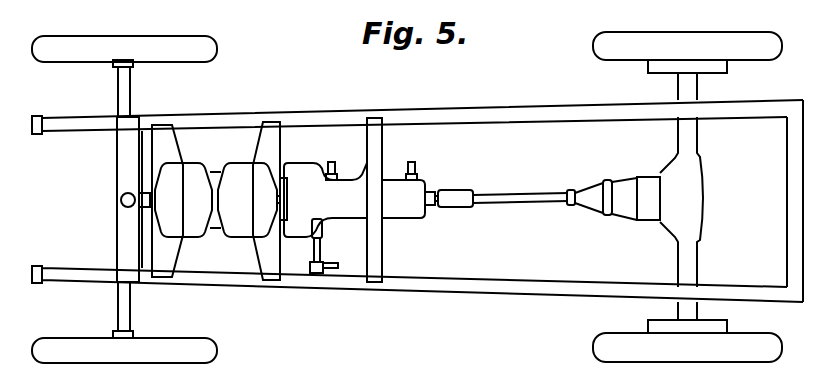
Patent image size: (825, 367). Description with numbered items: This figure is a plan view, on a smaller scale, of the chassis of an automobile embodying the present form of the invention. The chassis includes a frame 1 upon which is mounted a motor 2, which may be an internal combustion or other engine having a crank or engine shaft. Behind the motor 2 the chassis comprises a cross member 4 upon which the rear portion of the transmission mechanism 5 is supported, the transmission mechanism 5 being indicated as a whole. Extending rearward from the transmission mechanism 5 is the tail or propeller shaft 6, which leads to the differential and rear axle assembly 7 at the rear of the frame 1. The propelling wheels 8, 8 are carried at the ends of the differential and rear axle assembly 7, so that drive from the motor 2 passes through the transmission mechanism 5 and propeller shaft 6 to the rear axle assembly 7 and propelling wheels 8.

The frame 1 is at (560, 110).
The motor 2 is at (199, 176).
The cross member 4 is at (382, 143).
The transmission mechanism 5 is at (338, 222).
The tail or propeller shaft 6 is at (518, 198).
The differential and rear axle assembly 7 is at (668, 219).
The propelling wheels 8 is at (736, 41).